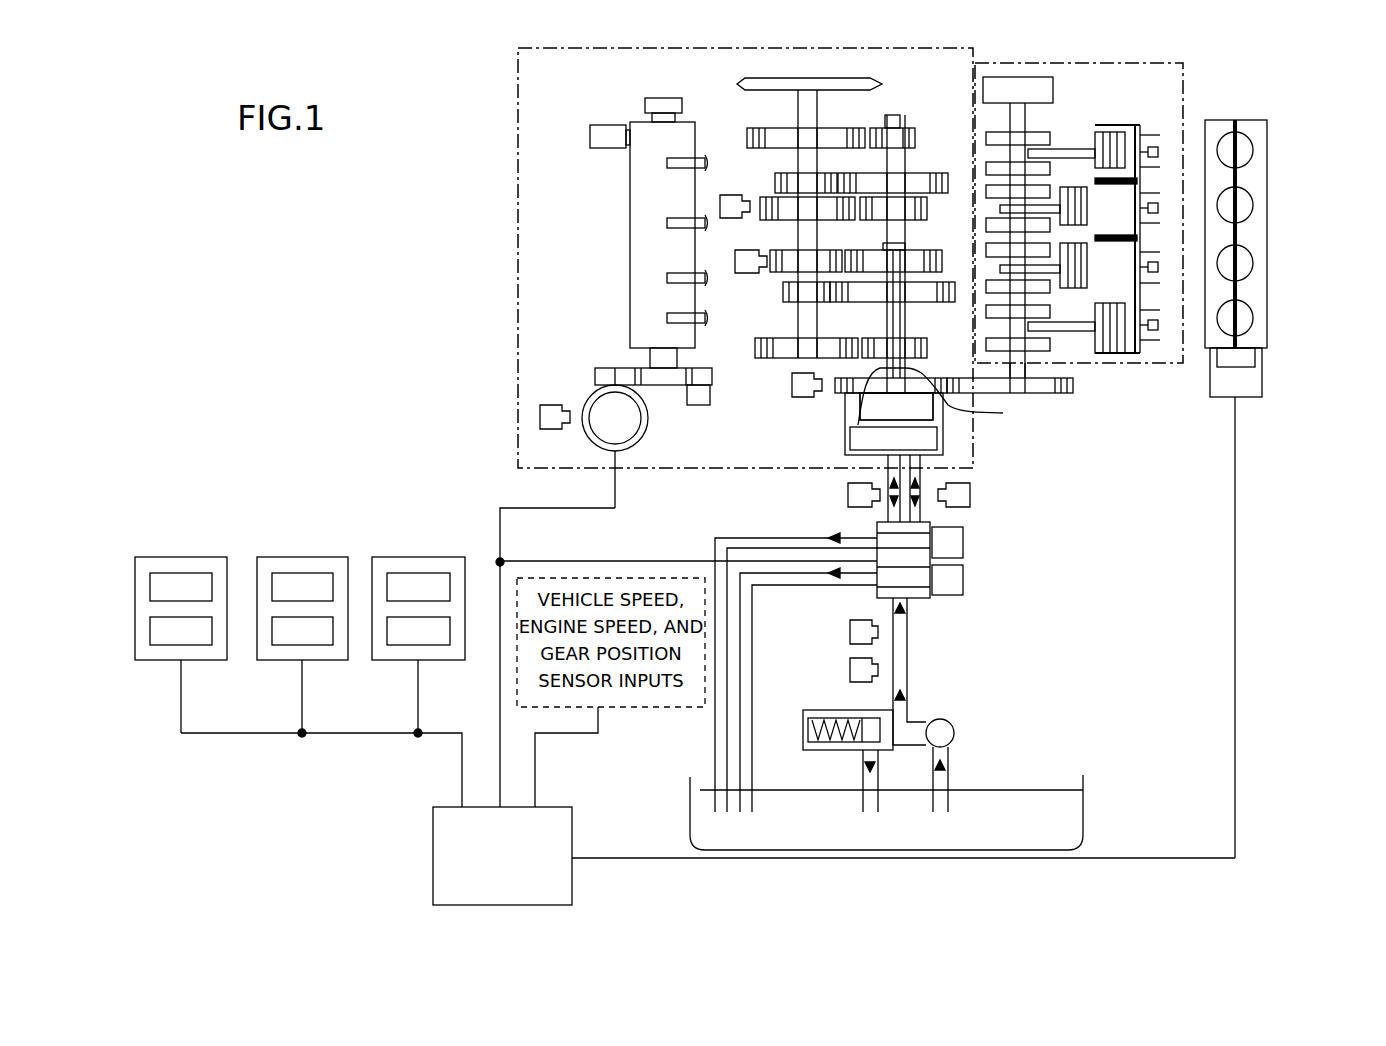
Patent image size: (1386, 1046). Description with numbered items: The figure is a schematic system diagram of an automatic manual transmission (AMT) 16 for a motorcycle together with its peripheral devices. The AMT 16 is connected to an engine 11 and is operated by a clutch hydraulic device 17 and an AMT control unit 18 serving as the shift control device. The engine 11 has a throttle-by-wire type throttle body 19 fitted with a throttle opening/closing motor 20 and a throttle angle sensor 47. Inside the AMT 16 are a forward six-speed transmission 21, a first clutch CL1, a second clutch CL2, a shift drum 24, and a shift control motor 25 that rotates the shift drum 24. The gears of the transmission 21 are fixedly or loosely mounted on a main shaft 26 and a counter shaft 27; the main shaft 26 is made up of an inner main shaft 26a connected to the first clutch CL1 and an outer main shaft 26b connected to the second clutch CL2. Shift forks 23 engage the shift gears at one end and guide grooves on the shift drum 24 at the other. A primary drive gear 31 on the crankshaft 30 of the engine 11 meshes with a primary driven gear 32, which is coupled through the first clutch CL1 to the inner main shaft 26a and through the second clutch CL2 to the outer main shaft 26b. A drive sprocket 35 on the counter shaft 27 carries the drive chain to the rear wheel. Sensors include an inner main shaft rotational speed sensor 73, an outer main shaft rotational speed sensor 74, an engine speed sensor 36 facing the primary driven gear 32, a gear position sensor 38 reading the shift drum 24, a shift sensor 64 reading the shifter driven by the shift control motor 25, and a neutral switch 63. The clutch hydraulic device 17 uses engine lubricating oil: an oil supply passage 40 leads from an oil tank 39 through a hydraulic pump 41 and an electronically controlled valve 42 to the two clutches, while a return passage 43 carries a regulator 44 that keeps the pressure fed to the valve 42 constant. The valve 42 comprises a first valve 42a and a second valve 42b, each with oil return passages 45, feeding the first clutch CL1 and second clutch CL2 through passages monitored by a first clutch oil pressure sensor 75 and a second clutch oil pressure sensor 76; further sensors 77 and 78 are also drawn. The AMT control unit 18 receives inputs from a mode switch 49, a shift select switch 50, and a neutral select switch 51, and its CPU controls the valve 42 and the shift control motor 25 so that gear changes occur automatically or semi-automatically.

The engine 11 is at (1187, 86).
The automatic manual transmission (AMT) 16 is at (514, 150).
The clutch hydraulic device 17 is at (1075, 716).
The AMT control unit 18 is at (540, 805).
The throttle body 19 is at (1270, 137).
The throttle opening/closing motor 20 is at (1262, 398).
The forward six-speed transmission 21 is at (732, 417).
The shift forks 23 is at (667, 163).
The shift drum 24 is at (692, 128).
The shift control motor 25 is at (592, 398).
The main shaft 26 is at (903, 238).
The inner main shaft 26a is at (935, 413).
The outer main shaft 26b is at (858, 425).
The counter shaft 27 is at (800, 330).
The crankshaft 30 is at (1030, 368).
The primary drive gear 31 is at (1075, 388).
The primary driven gear 32 is at (830, 405).
The drive sprocket 35 is at (802, 78).
The engine speed sensor 36 is at (792, 385).
The gear position sensor 38 is at (645, 103).
The oil tank 39 is at (700, 815).
The oil supply passage 40 is at (920, 682).
The hydraulic pump 41 is at (955, 733).
The valve 42 is at (990, 562).
The first valve 42a is at (963, 543).
The second valve 42b is at (963, 580).
The return passage 43 is at (863, 766).
The regulator 44 is at (806, 718).
The oil return passages 45 is at (750, 742).
The throttle angle sensor 47 is at (1258, 360).
The mode switch 49 is at (328, 556).
The shift select switch 50 is at (202, 556).
The neutral select switch 51 is at (428, 556).
The neutral switch 63 is at (590, 133).
The shift sensor 64 is at (555, 429).
The inner main shaft rotational speed sensor 73 is at (720, 207).
The outer main shaft rotational speed sensor 74 is at (735, 262).
The first clutch oil pressure sensor 75 is at (970, 497).
The second clutch oil pressure sensor 76 is at (848, 497).
The oil temperature sensor 77 is at (850, 632).
The oil pressure sensor 78 is at (850, 670).
The first clutch CL1 is at (937, 450).
The second clutch CL2 is at (935, 432).